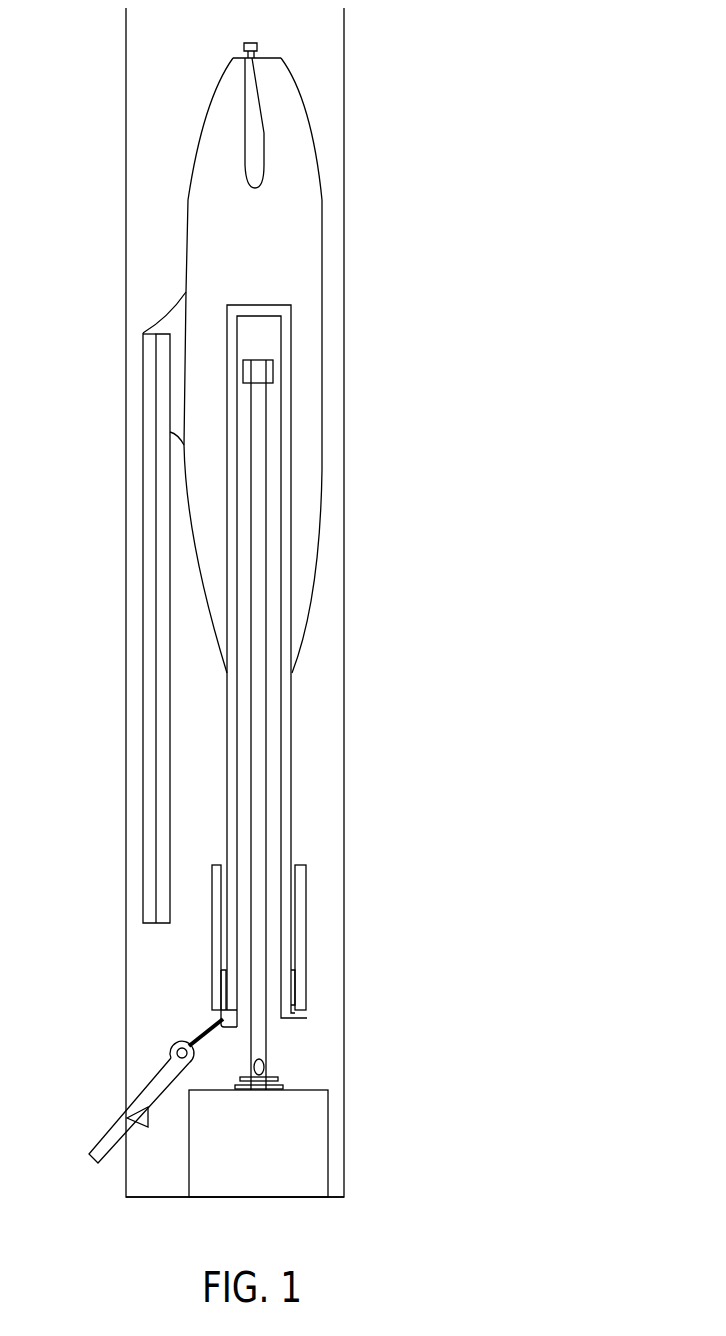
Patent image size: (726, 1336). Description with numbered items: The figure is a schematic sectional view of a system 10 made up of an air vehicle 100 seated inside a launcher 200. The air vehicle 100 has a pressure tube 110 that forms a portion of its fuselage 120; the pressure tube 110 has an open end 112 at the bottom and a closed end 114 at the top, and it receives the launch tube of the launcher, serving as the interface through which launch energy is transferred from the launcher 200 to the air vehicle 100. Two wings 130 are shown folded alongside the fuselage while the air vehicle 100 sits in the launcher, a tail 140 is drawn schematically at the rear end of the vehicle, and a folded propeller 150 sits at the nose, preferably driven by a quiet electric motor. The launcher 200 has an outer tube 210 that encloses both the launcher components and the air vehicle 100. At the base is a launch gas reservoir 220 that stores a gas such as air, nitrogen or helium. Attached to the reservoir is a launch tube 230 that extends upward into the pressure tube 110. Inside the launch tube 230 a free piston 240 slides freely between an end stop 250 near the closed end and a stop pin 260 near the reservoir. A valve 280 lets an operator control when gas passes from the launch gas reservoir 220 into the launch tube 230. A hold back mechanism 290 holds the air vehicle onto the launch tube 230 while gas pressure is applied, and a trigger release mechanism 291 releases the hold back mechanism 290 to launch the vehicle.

The system 10 is at (493, 642).
The air vehicle 100 is at (308, 148).
The pressure tube 110 is at (288, 843).
The open end 112 is at (283, 1013).
The closed end 114 is at (283, 312).
The fuselage 120 is at (307, 255).
The wings 130 is at (148, 698).
The tail 140 is at (212, 938).
The folded propeller 150 is at (245, 133).
The launcher 200 is at (328, 663).
The tube 210 is at (344, 80).
The launch gas reservoir 220 is at (315, 1142).
The launch tube 230 is at (268, 1042).
The free piston 240 is at (264, 1064).
The end stop 250 is at (273, 371).
The stop pin 260 is at (278, 1080).
The valve 280 is at (236, 1088).
The hold back mechanism 290 is at (191, 1042).
The trigger release mechanism 291 is at (105, 1132).